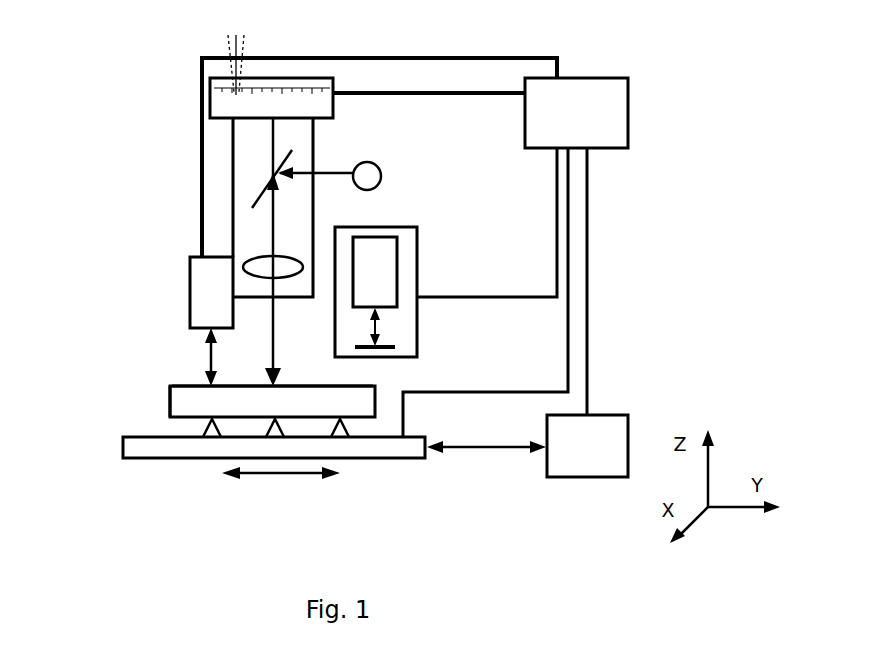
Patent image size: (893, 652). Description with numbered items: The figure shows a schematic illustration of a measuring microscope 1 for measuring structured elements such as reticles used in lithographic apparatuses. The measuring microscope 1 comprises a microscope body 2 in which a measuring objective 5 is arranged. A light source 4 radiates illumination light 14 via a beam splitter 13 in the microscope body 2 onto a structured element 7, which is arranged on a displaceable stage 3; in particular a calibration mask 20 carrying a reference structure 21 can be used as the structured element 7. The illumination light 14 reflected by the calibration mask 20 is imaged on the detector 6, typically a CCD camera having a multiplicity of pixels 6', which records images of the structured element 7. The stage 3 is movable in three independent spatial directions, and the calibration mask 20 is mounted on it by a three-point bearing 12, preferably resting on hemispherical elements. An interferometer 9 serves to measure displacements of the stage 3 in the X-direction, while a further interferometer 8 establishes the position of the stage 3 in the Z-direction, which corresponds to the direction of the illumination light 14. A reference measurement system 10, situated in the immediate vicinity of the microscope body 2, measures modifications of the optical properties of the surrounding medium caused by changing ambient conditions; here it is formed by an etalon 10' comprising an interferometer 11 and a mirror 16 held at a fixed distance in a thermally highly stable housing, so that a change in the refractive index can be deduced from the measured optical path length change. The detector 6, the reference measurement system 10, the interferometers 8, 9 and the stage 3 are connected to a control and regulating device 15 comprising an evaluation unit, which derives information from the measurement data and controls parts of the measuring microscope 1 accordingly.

The measuring microscope 1 is at (158, 70).
The microscope body 2 is at (232, 158).
The stage 3 is at (140, 446).
The light source 4 is at (370, 177).
The measuring objective 5 is at (258, 268).
The detector 6 is at (223, 112).
The pixels 6' is at (235, 50).
The structured element 7 is at (193, 399).
The interferometer 8 is at (213, 292).
The interferometer 9 is at (597, 430).
The reference measurement system 10 is at (517, 273).
The etalon 10' is at (539, 234).
The interferometer 11 is at (373, 257).
The three-point bearing 12 is at (212, 433).
The beam splitter 13 is at (258, 193).
The illumination light 14 is at (277, 330).
The control and regulating device 15 is at (597, 103).
The mirror 16 is at (393, 350).
The calibration mask 20 is at (185, 409).
The reference structure 21 is at (192, 385).